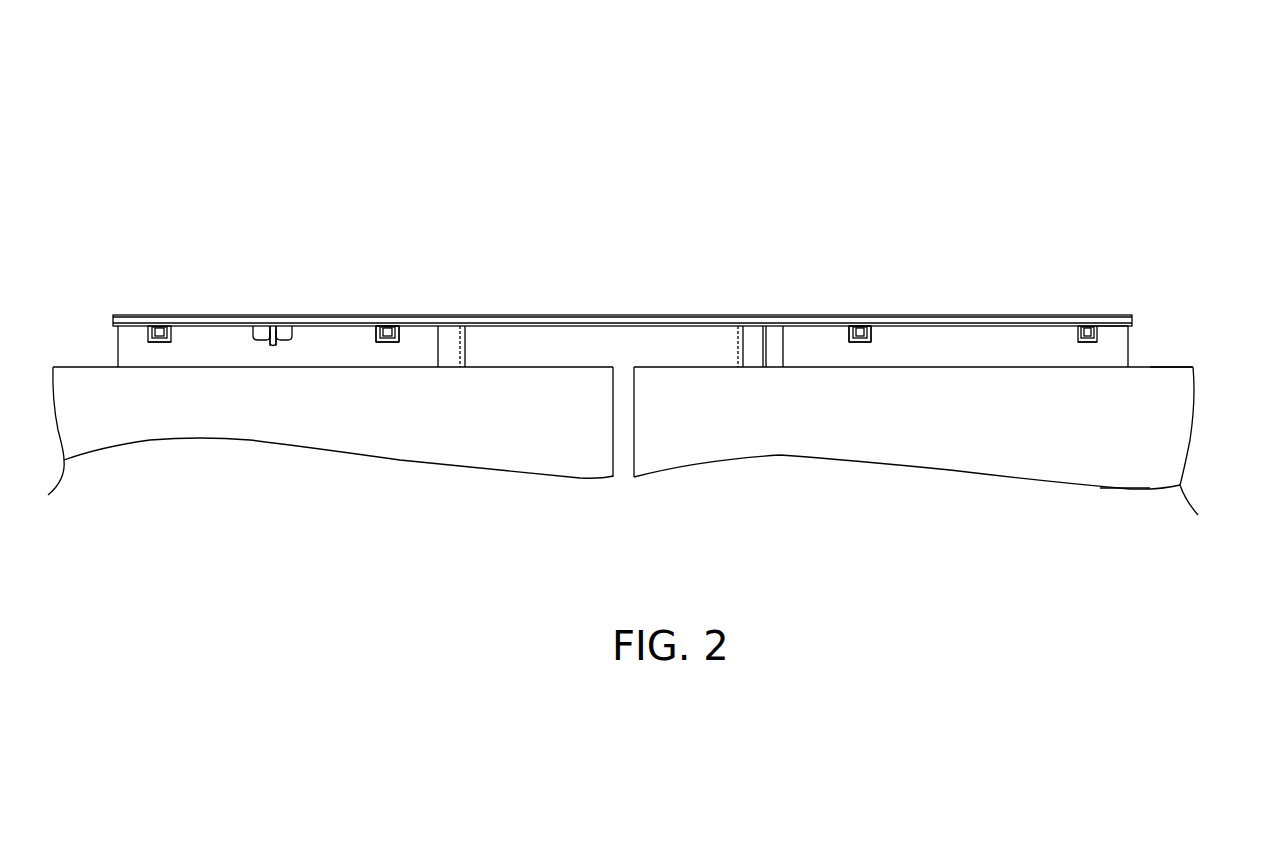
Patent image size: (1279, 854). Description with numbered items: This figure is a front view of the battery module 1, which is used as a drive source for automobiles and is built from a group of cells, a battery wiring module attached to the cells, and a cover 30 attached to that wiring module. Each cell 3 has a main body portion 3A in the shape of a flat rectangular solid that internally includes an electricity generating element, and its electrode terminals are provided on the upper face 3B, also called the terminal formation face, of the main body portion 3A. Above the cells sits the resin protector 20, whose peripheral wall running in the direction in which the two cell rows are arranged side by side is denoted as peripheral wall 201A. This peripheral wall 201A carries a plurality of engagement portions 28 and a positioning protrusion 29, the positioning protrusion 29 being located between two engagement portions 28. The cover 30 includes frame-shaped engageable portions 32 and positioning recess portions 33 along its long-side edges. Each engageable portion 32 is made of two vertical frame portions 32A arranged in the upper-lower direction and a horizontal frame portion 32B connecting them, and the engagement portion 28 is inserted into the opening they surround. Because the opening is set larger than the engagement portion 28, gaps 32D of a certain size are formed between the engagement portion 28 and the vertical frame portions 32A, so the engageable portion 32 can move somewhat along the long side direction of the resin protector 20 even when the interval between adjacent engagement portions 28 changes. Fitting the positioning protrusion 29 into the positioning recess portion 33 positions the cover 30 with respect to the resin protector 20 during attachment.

The battery module 1 is at (627, 186).
The resin protector 20 is at (117, 350).
The cover 30 is at (1128, 330).
The peripheral wall 201A is at (1143, 340).
The engagement portion 28 is at (172, 328).
The positioning recess portion 33 is at (271, 330).
The gap 32D is at (393, 330).
The engageable portion 32 is at (160, 342).
The positioning protrusion 29 is at (272, 346).
The vertical frame portion 32A is at (376, 342).
The horizontal frame portion 32B is at (388, 342).
The cell 3 is at (577, 455).
The main body portion 3A is at (1137, 468).
The upper face 3B is at (1160, 360).